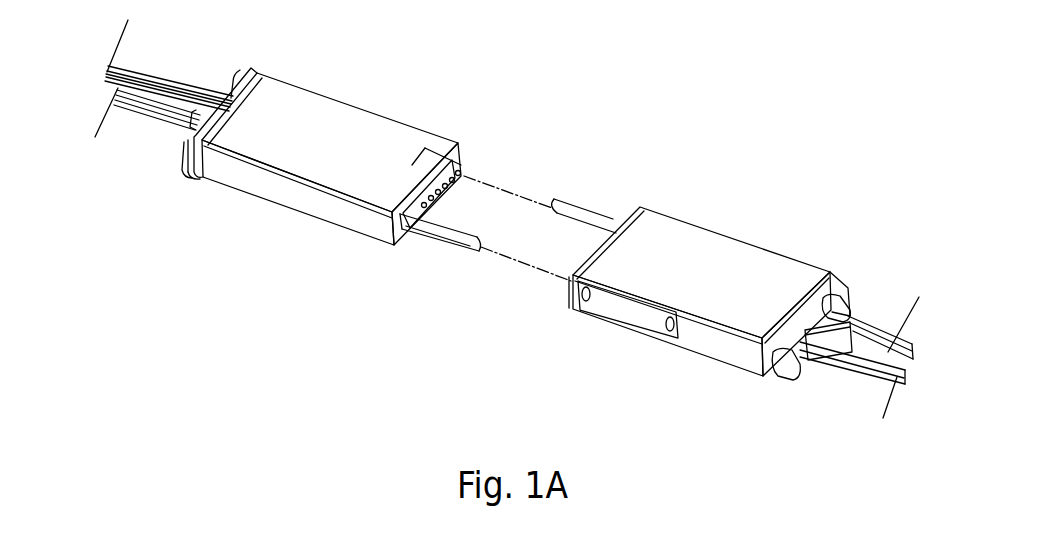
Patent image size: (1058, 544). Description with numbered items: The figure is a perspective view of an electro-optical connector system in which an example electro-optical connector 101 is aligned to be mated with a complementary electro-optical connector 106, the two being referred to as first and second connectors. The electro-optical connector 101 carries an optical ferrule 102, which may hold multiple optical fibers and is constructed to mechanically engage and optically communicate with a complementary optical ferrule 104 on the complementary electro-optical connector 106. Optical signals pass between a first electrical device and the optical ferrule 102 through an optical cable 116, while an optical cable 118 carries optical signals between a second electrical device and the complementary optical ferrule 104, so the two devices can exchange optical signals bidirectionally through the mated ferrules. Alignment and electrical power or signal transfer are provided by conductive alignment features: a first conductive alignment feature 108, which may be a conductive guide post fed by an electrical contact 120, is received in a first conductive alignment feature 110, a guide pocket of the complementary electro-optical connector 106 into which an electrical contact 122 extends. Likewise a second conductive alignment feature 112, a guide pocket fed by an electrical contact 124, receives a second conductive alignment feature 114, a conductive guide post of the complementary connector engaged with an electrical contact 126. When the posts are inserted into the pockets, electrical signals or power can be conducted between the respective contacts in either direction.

The electro-optical connector 101 is at (309, 54).
The optical ferrule 102 is at (431, 164).
The complementary optical ferrule 104 is at (580, 255).
The complementary electro-optical connector 106 is at (720, 285).
The first conductive alignment feature 108 is at (450, 232).
The first conductive alignment feature 110 is at (613, 303).
The second conductive alignment feature 112 is at (460, 162).
The second conductive alignment feature 114 is at (573, 212).
The optical cable 116 is at (140, 92).
The optical cable 118 is at (850, 350).
The electrical contact 120 is at (178, 126).
The electrical contact 122 is at (880, 377).
The electrical contact 124 is at (143, 73).
The electrical contact 126 is at (873, 330).